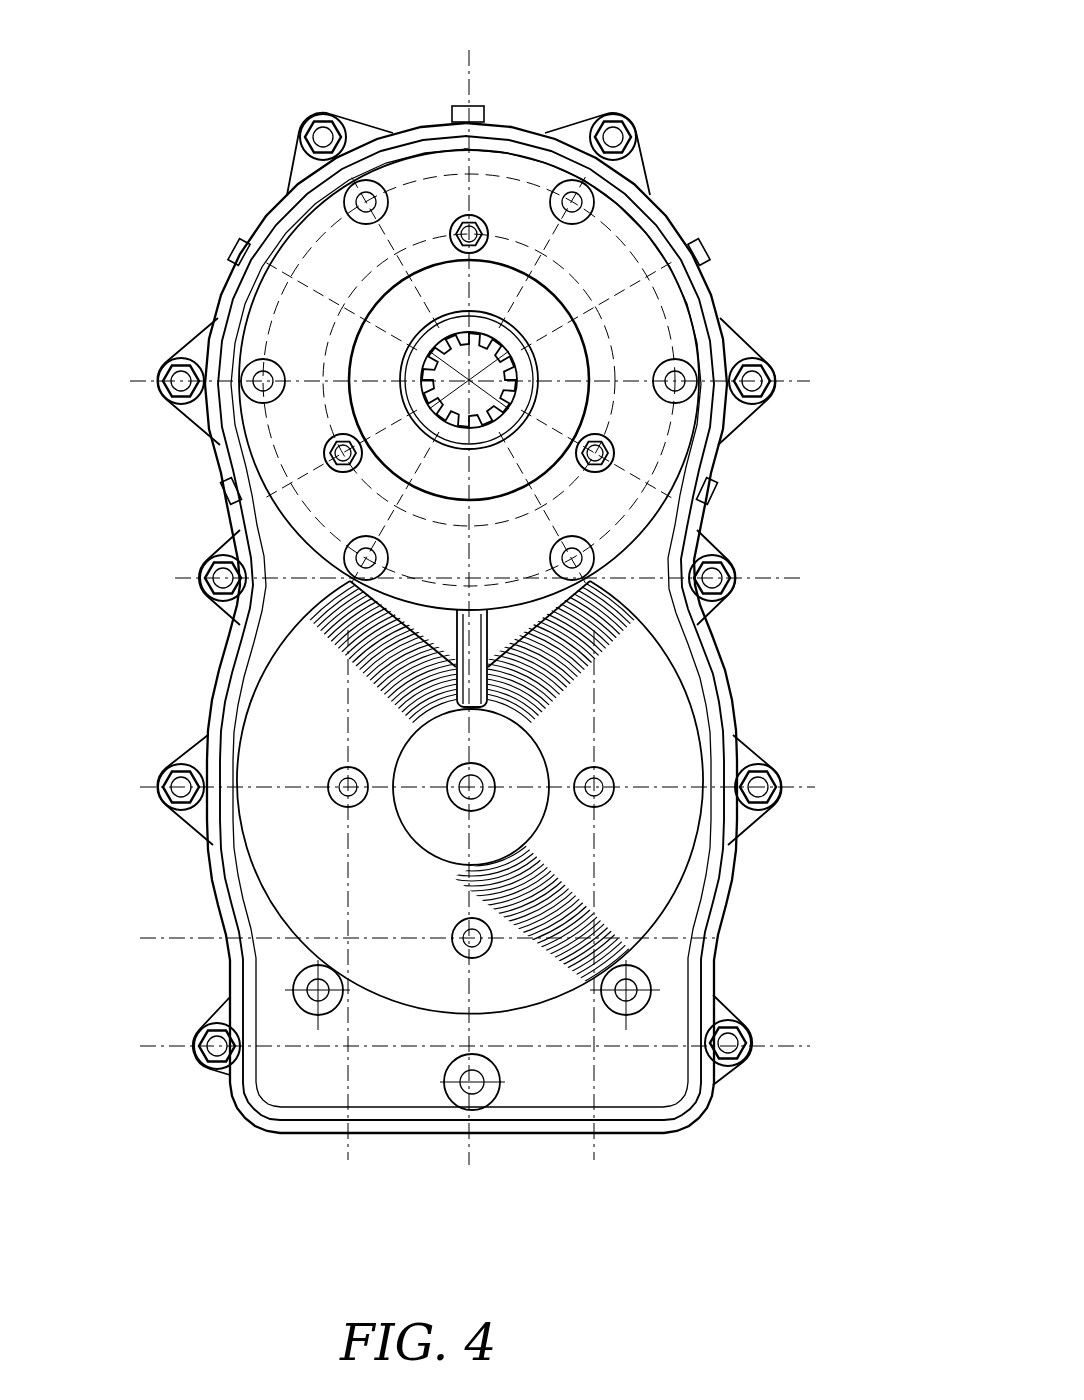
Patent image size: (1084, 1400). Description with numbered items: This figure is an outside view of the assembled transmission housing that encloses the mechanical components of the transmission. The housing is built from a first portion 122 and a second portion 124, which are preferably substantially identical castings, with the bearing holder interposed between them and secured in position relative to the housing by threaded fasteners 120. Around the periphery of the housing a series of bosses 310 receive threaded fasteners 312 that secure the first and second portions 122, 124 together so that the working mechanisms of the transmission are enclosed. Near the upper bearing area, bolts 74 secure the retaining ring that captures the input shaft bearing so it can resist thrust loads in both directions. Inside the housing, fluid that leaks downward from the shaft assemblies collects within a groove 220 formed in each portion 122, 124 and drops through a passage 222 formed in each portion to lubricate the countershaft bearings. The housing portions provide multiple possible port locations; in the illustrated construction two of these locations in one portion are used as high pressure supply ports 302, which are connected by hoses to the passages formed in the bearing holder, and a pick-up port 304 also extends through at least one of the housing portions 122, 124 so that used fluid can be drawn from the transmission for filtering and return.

The bolts 74 is at (487, 222).
The threaded fasteners 120 is at (462, 104).
The first portion 122 is at (708, 1092).
The second portion 124 is at (471, 628).
The groove 220 is at (737, 484).
The passage 222 is at (617, 648).
The high pressure supply ports 302 is at (640, 978).
The pick-up port 304 is at (450, 1094).
The bosses 310 is at (292, 160).
The threaded fasteners 312 is at (618, 122).